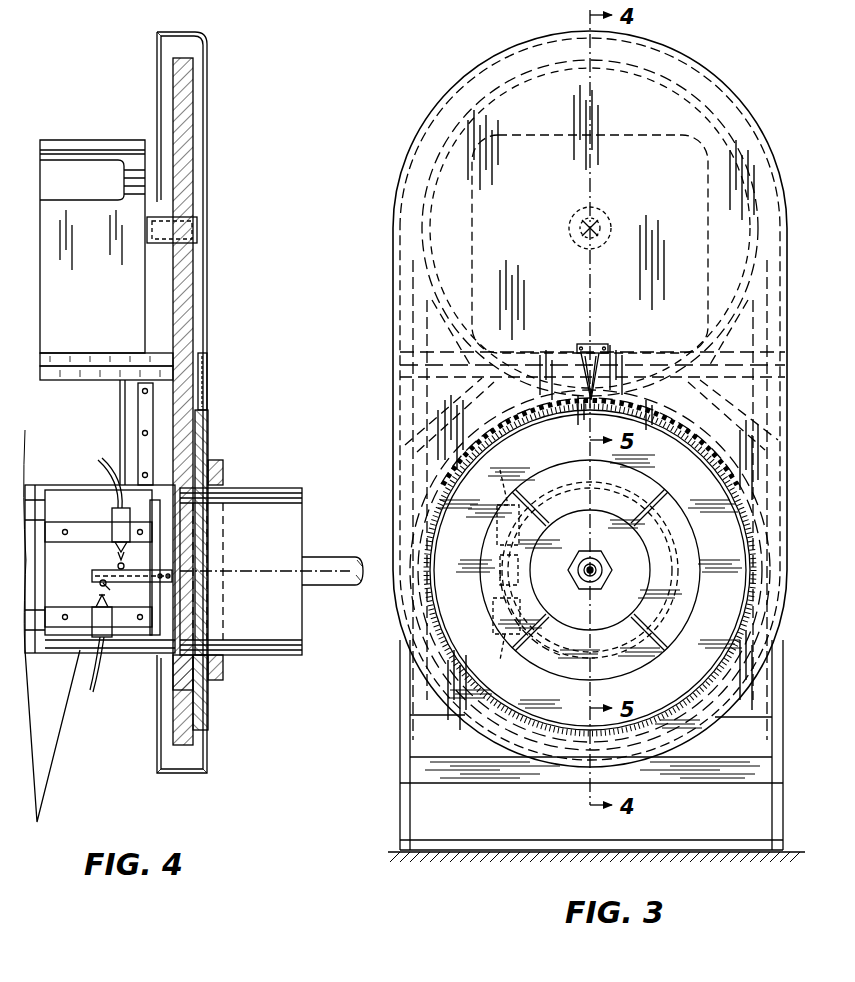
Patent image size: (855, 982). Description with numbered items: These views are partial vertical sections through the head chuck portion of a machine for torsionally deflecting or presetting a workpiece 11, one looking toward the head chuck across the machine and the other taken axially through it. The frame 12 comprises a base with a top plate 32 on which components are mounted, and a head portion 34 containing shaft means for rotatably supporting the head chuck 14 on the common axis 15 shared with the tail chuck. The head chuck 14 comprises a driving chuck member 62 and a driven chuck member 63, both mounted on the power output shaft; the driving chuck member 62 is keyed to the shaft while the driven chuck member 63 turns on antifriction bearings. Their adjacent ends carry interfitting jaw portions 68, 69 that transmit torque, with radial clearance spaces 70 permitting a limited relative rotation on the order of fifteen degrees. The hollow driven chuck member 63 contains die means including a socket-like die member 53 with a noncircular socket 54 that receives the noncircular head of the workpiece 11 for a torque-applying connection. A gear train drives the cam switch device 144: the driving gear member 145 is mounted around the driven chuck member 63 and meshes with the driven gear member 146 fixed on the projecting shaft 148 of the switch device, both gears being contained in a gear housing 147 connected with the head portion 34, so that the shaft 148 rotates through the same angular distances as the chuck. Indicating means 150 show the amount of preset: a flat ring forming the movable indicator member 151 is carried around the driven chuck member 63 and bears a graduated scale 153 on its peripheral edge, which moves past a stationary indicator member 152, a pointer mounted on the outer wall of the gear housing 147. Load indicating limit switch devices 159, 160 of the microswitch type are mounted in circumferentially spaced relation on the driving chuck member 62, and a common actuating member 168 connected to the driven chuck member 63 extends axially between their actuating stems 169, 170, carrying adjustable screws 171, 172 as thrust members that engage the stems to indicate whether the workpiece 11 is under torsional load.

In FIG. 3, the workpiece 11 is at (600, 573).
In FIG. 4, the workpiece 11 is at (333, 555).
In FIG. 3, the frame 12 is at (395, 858).
In FIG. 3, the head chuck 14 is at (668, 597).
In FIG. 4, the head chuck 14 is at (278, 490).
In FIG. 3, the common axis 15 is at (583, 566).
In FIG. 4, the common axis 15 is at (302, 530).
In FIG. 3, the top plate 32 is at (400, 845).
In FIG. 3, the head portion 34 is at (400, 742).
In FIG. 3, the socket-like die member 53 is at (612, 520).
In FIG. 3, the noncircular socket 54 is at (625, 540).
In FIG. 4, the driving chuck member 62 is at (85, 485).
In FIG. 3, the driven chuck member 63 is at (640, 600).
In FIG. 4, the driven chuck member 63 is at (230, 486).
In FIG. 4, the jaw portion 68 is at (160, 596).
In FIG. 4, the jaw portion 69 is at (148, 655).
In FIG. 3, the radial clearance spaces 70 is at (541, 640).
In FIG. 3, the cam switch device 144 is at (622, 138).
In FIG. 4, the cam switch device 144 is at (58, 148).
In FIG. 3, the driving gear member 145 is at (715, 378).
In FIG. 4, the driving gear member 145 is at (205, 440).
In FIG. 3, the driven gear member 146 is at (546, 398).
In FIG. 4, the driven gear member 146 is at (195, 300).
In FIG. 3, the gear housing 147 is at (740, 130).
In FIG. 4, the gear housing 147 is at (208, 185).
In FIG. 3, the projecting shaft 148 is at (614, 218).
In FIG. 4, the projecting shaft 148 is at (197, 230).
In FIG. 3, the indicating means 150 is at (695, 440).
In FIG. 4, the indicating means 150 is at (213, 455).
In FIG. 3, the movable indicator member 151 is at (690, 700).
In FIG. 4, the movable indicator member 151 is at (210, 412).
In FIG. 3, the stationary indicator member 152 is at (606, 372).
In FIG. 4, the stationary indicator member 152 is at (208, 370).
In FIG. 3, the graduated scale 153 is at (500, 440).
In FIG. 4, the graduated scale 153 is at (106, 366).
In FIG. 3, the limit switch device 159 is at (492, 616).
In FIG. 4, the limit switch device 159 is at (75, 655).
In FIG. 3, the limit switch device 160 is at (494, 520).
In FIG. 4, the limit switch device 160 is at (110, 520).
In FIG. 3, the common actuating member 168 is at (497, 578).
In FIG. 4, the common actuating member 168 is at (95, 580).
In FIG. 4, the actuating stem 169 is at (96, 604).
In FIG. 4, the actuating stem 170 is at (108, 554).
In FIG. 4, the screw 171 is at (112, 592).
In FIG. 4, the screw 172 is at (112, 566).